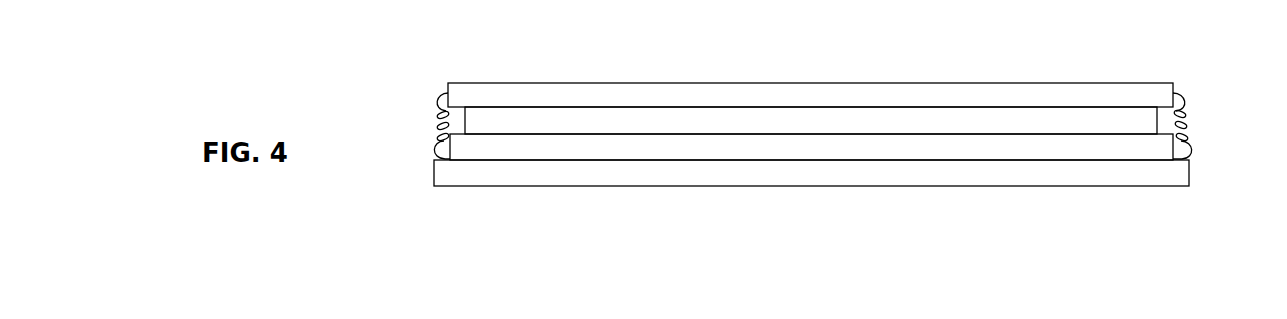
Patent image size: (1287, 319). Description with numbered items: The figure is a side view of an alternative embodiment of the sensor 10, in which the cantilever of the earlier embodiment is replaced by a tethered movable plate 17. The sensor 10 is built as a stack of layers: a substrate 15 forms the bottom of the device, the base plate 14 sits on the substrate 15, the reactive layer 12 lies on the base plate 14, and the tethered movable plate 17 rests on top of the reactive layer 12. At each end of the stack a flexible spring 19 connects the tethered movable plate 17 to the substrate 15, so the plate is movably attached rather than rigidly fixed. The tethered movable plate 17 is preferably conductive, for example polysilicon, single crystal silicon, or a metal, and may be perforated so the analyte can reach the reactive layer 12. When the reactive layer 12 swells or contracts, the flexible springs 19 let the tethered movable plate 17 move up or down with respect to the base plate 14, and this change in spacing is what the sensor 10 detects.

The sensor 10 is at (810, 148).
The reactive layer 12 is at (758, 123).
The base plate 14 is at (763, 151).
The substrate 15 is at (968, 177).
The tethered movable plate 17 is at (973, 95).
The flexible springs 19 is at (438, 122).